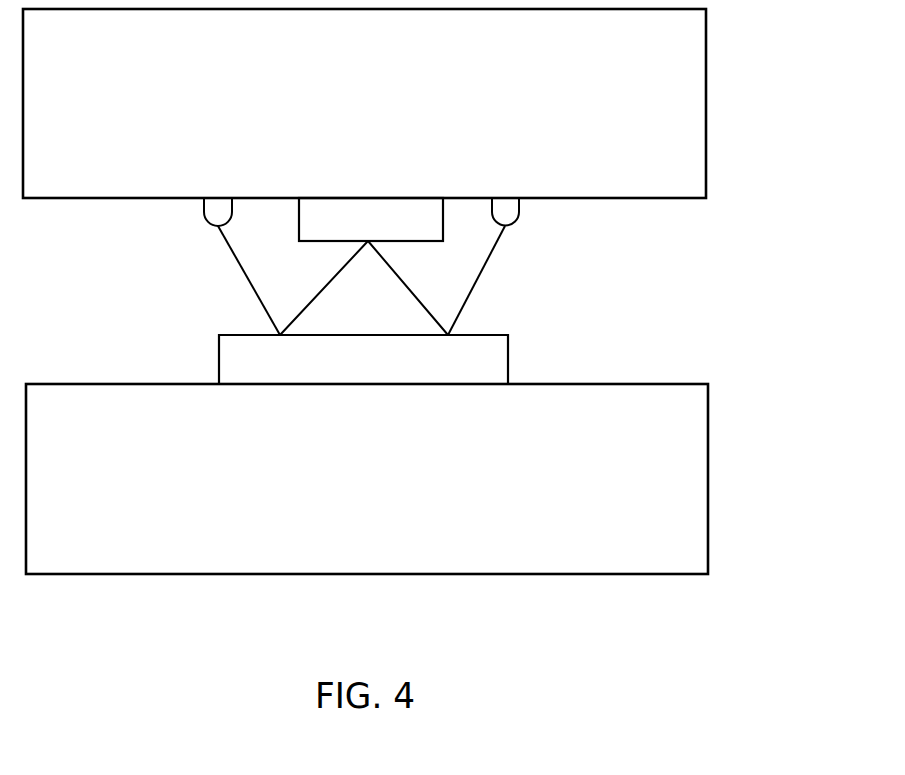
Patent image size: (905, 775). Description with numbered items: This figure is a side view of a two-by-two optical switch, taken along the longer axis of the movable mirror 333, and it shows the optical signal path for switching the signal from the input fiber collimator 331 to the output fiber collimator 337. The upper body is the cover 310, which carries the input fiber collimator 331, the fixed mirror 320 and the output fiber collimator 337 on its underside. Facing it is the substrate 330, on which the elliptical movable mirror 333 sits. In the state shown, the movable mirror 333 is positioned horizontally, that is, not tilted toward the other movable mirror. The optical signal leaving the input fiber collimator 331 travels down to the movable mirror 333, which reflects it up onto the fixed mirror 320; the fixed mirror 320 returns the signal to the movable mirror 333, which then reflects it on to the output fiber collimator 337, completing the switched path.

The cover 310 is at (713, 108).
The substrate 330 is at (715, 482).
The fixed mirror 320 is at (364, 245).
The input fiber collimator 331 is at (234, 245).
The output fiber collimator 337 is at (486, 245).
The movable mirror 333 is at (363, 382).